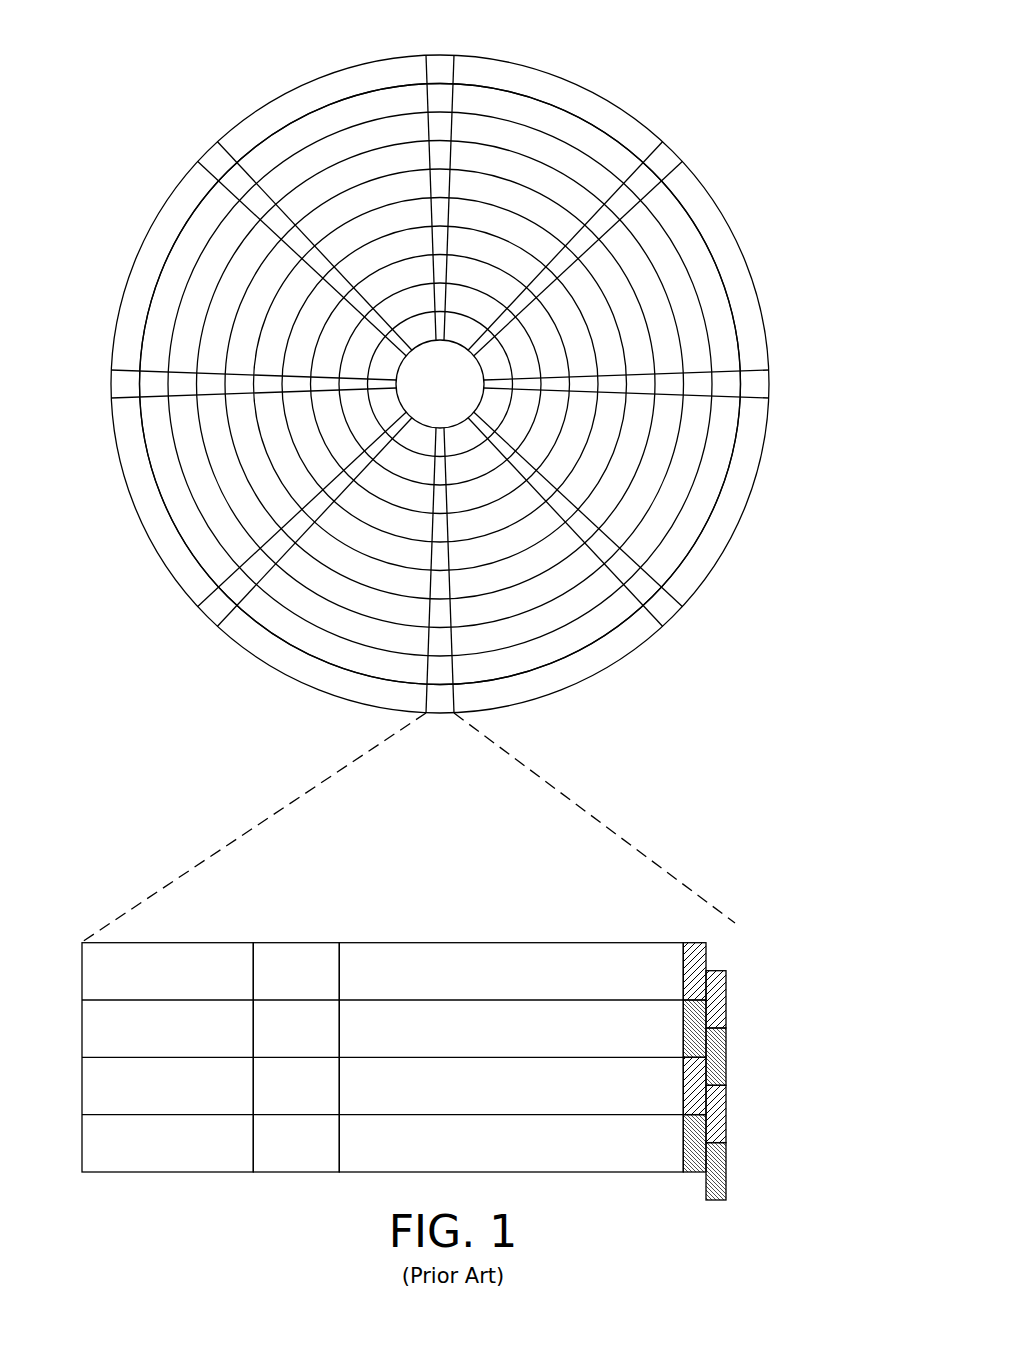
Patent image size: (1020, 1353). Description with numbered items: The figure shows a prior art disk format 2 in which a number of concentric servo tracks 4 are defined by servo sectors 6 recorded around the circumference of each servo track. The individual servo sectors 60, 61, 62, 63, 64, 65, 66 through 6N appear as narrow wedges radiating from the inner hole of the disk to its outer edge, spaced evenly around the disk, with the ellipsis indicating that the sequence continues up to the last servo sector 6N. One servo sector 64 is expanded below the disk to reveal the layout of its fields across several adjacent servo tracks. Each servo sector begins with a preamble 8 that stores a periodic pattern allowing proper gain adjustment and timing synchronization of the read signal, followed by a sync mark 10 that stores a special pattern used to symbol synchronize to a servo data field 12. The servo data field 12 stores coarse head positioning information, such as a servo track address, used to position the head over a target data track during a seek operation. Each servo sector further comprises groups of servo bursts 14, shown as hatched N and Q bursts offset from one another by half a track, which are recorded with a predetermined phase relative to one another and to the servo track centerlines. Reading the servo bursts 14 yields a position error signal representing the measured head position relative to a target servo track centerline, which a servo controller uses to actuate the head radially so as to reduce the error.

The disk format 2 is at (197, 58).
The servo track 4 is at (555, 120).
The servo sector 6 is at (441, 471).
The servo sector 60 is at (440, 61).
The servo sector 61 is at (664, 159).
The servo sector 62 is at (761, 385).
The servo sector 63 is at (664, 609).
The servo sector 64 is at (293, 789).
The servo sector 65 is at (213, 611).
The servo sector 66 is at (119, 386).
The servo sector 6N is at (214, 157).
The preamble 8 is at (175, 942).
The sync mark 10 is at (297, 942).
The servo data field 12 is at (497, 942).
The servo bursts 14 is at (720, 942).